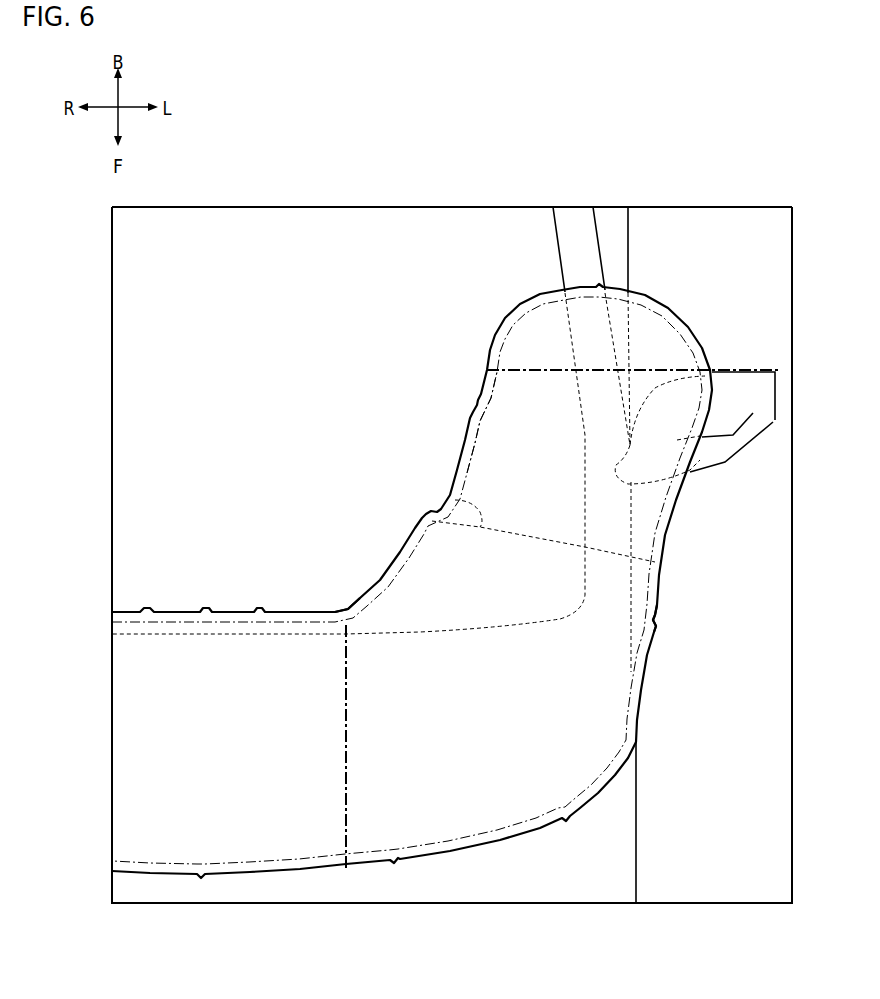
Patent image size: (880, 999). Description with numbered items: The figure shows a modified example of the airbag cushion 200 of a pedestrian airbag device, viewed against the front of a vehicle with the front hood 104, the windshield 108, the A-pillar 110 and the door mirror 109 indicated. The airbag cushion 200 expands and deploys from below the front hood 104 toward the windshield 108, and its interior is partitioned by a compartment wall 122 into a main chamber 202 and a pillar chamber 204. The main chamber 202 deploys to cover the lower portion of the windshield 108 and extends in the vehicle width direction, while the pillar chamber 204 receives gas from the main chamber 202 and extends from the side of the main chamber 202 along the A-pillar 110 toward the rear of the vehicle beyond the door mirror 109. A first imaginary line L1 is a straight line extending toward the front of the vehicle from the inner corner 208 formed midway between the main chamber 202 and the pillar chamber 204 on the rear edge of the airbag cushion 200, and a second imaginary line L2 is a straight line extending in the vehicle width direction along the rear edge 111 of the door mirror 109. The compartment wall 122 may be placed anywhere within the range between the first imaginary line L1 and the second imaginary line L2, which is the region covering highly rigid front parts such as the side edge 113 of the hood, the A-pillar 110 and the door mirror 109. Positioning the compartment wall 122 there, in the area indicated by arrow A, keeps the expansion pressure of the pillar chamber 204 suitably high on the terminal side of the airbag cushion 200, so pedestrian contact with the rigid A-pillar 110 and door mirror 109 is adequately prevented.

The front hood 104 is at (554, 905).
The windshield 108 is at (411, 227).
The door mirror 109 is at (720, 460).
The A-pillar 110 is at (583, 238).
The rear edge of the door mirror 111 is at (775, 370).
The side edge of the vehicle hood 113 is at (656, 631).
The compartment wall 122 is at (455, 502).
The airbag cushion 200 is at (232, 612).
The main chamber 202 is at (183, 665).
The pillar chamber 204 is at (490, 432).
The inner corner 208 is at (346, 612).
The first imaginary line L1 is at (346, 774).
The second imaginary line L2 is at (665, 368).
The direction A is at (563, 533).